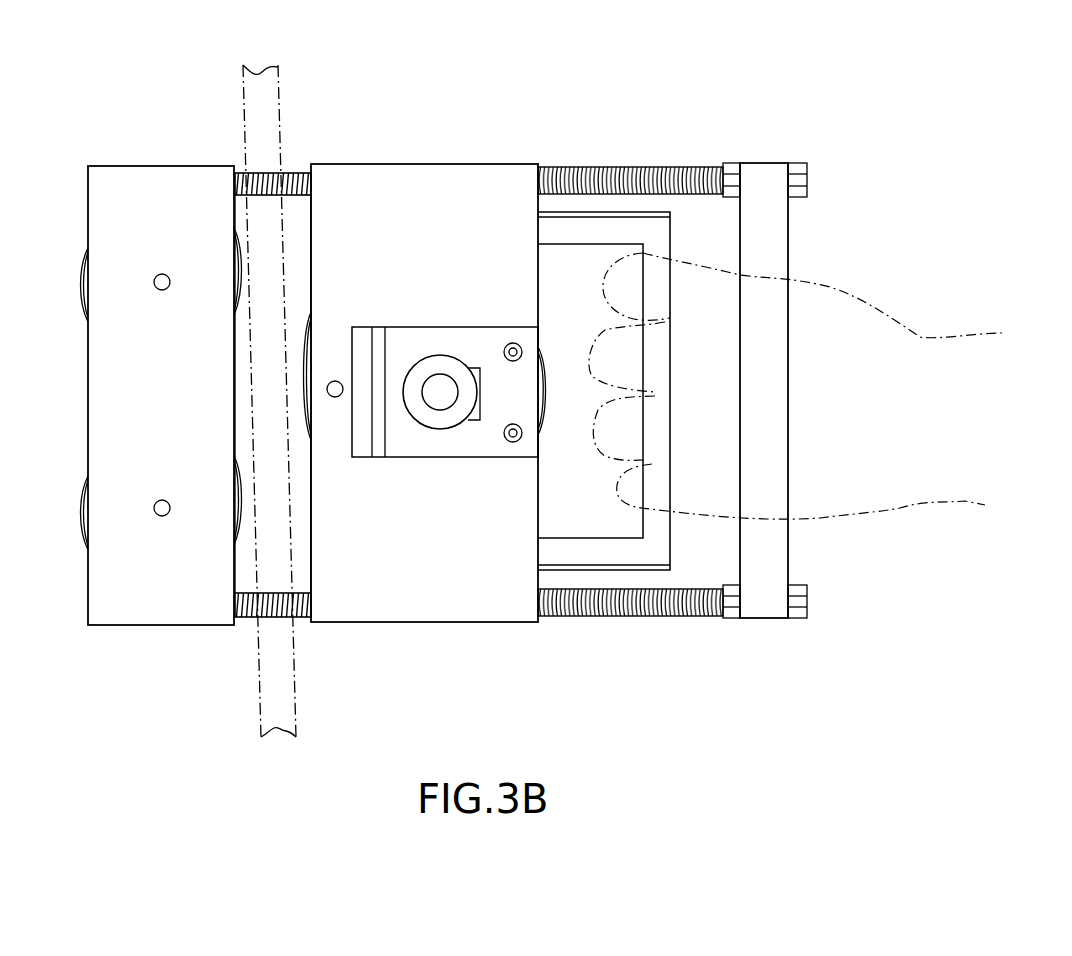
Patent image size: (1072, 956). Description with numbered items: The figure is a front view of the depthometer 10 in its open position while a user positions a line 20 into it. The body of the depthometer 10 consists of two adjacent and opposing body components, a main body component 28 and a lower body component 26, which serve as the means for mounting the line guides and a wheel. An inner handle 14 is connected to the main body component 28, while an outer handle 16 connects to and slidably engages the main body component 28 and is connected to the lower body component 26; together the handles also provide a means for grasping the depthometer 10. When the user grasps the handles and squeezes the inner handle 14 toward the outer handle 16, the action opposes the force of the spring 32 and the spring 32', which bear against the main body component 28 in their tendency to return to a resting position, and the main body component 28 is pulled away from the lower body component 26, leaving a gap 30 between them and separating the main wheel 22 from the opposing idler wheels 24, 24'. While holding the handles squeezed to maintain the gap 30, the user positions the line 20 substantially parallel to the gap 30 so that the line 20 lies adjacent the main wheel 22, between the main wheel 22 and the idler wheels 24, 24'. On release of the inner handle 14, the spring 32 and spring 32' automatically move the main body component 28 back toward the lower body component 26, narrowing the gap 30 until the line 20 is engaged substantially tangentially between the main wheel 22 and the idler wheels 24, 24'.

The depthometer 10 is at (595, 105).
The inner handle 14 is at (672, 222).
The outer handle 16 is at (764, 172).
The line 20 is at (286, 112).
The main wheel 22 is at (312, 327).
The idler wheel 24 is at (206, 247).
The idler wheel 24' is at (370, 428).
The lower body component 26 is at (107, 176).
The main body component 28 is at (466, 166).
The gap 30 is at (312, 158).
The spring 32 is at (630, 146).
The spring 32' is at (630, 638).